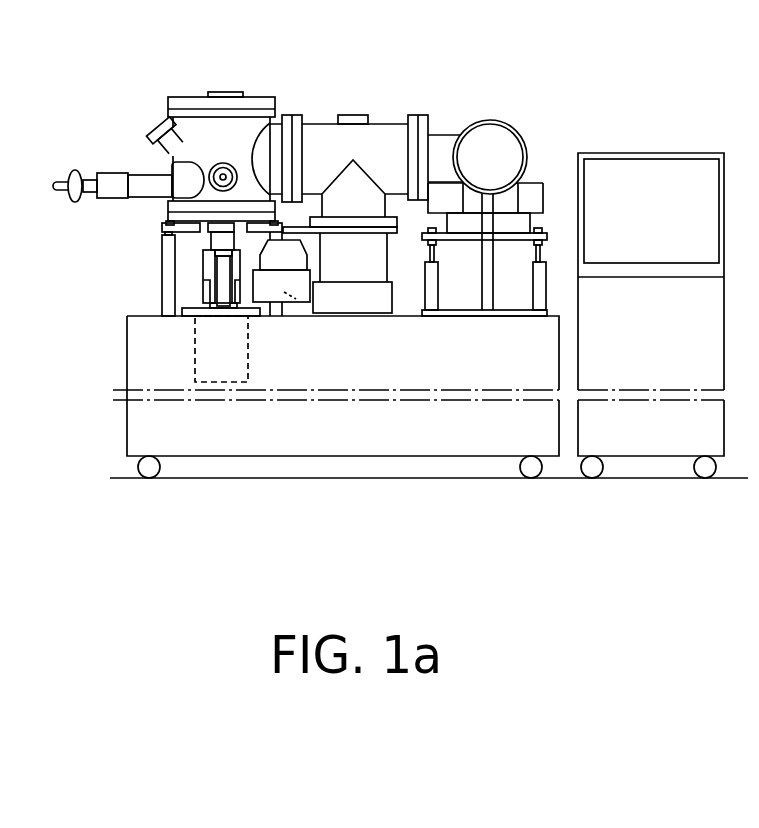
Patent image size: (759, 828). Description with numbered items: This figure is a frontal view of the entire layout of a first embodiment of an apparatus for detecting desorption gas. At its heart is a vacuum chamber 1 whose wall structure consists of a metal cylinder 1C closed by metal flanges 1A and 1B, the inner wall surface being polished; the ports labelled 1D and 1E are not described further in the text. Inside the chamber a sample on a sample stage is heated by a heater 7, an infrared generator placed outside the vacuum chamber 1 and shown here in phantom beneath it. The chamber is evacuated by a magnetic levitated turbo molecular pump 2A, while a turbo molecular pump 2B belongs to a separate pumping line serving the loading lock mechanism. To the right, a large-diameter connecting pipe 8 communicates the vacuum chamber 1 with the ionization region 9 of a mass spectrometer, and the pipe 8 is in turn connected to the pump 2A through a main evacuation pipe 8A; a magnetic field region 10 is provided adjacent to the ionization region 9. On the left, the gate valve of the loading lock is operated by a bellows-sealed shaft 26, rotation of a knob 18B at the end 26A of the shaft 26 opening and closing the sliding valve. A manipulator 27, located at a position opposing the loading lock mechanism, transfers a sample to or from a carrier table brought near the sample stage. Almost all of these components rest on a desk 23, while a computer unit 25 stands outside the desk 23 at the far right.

The vacuum chamber 1 is at (201, 185).
The metal flange 1A is at (257, 102).
The metal flange 1B is at (168, 219).
The metal cylinder 1C is at (238, 140).
The top port 1D is at (207, 93).
The oblique port 1E is at (153, 120).
The magnetic levitated turbo molecular pump 2A is at (348, 275).
The turbo molecular pump 2B is at (290, 298).
The heater 7 is at (240, 345).
The connecting pipe 8 is at (373, 136).
The main evacuation pipe 8A is at (370, 203).
The ionization region 9 is at (505, 137).
The magnetic field region 10 is at (535, 185).
The knob 18B is at (72, 170).
The desk 23 is at (277, 443).
The computer unit 25 is at (668, 165).
The shaft 26 is at (145, 186).
The end of shaft 26A is at (120, 173).
The manipulator 27 is at (216, 190).